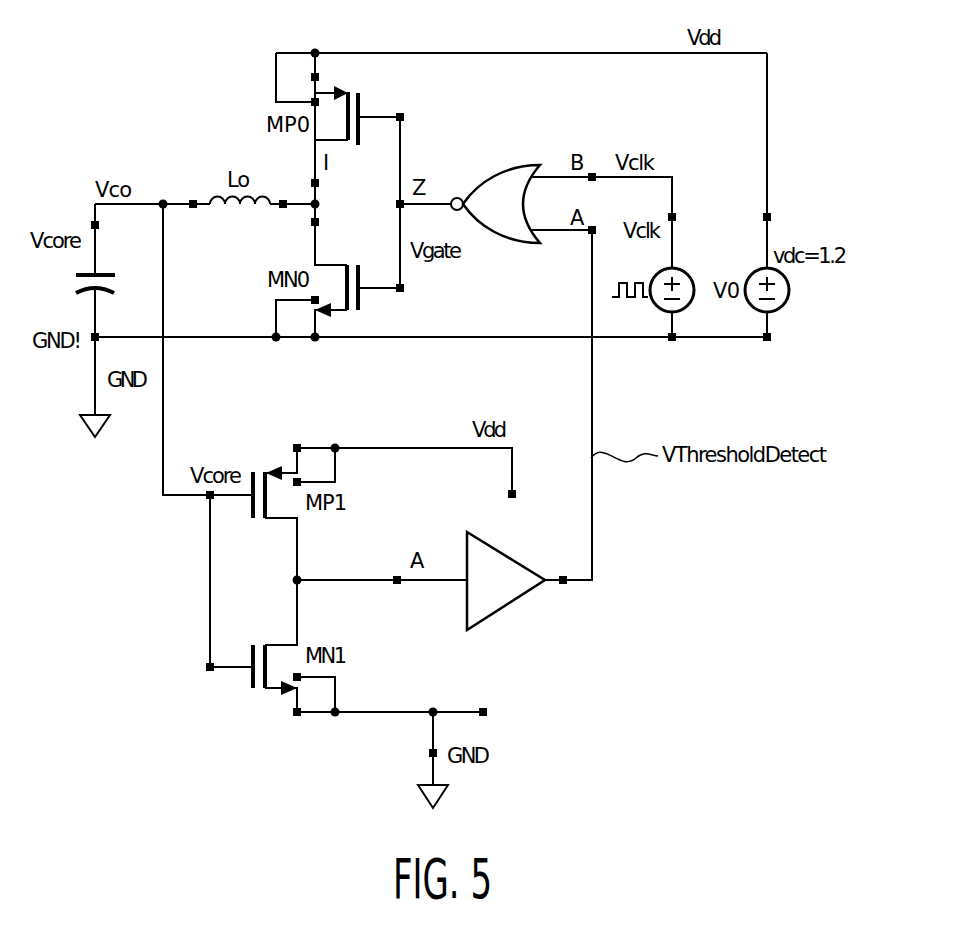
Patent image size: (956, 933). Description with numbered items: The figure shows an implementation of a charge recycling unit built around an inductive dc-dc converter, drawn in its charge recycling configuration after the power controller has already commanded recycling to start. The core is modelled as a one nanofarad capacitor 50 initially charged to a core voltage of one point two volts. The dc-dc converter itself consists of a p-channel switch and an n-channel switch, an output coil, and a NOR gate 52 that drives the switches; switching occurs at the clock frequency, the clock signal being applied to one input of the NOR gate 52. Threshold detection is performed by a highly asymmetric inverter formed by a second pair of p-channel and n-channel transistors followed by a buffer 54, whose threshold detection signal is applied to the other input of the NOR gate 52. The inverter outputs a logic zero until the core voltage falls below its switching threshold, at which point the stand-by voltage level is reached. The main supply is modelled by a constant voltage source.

The capacitor 50 is at (115, 280).
The NOR gate 52 is at (509, 214).
The buffer 54 is at (503, 591).